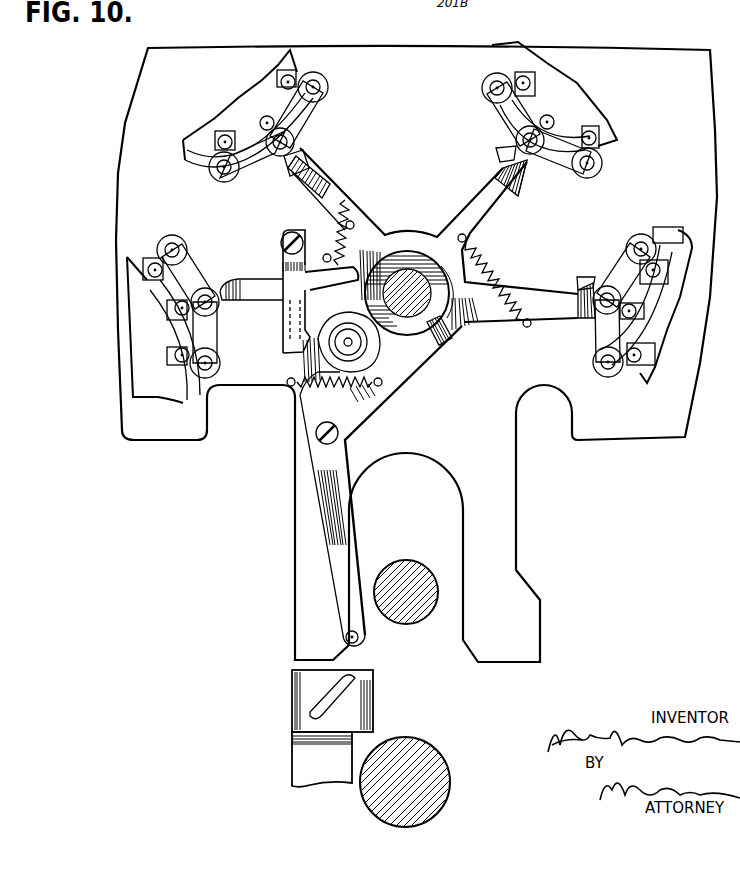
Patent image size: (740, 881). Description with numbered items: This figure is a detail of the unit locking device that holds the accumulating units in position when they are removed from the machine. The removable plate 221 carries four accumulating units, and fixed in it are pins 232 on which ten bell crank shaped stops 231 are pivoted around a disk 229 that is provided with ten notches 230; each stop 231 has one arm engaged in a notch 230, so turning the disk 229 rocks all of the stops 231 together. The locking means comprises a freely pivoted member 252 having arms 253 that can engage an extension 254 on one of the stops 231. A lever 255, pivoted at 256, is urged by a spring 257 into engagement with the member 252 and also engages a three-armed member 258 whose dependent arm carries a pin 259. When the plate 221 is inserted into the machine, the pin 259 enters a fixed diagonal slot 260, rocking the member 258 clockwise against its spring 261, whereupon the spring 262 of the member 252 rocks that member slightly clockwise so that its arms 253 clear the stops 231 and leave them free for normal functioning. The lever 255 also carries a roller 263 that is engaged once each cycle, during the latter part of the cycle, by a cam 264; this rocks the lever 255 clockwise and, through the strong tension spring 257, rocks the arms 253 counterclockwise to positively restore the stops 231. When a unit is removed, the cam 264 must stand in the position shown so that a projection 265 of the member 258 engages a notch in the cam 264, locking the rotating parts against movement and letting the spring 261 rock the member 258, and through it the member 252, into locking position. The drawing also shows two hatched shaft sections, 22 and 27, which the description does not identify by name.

The shaft 22 is at (437, 752).
The shaft 27 is at (428, 588).
The plate 221 is at (507, 516).
The disk 229 is at (253, 97).
The notches 230 is at (222, 130).
The bell crank shaped stops 231 is at (302, 108).
The pins 232 is at (320, 87).
The freely pivoted member 252 is at (410, 238).
The arms 253 is at (513, 171).
The extension 254 is at (290, 171).
The lever 255 is at (290, 260).
The pivot 256 is at (292, 234).
The spring 257 is at (345, 200).
The three-armed member 258 is at (345, 417).
The pin 259 is at (360, 637).
The fixed diagonal slot 260 is at (348, 693).
The spring 261 is at (296, 396).
The spring 262 is at (495, 271).
The roller 263 is at (366, 353).
The cam 264 is at (453, 312).
The projection 265 is at (441, 344).